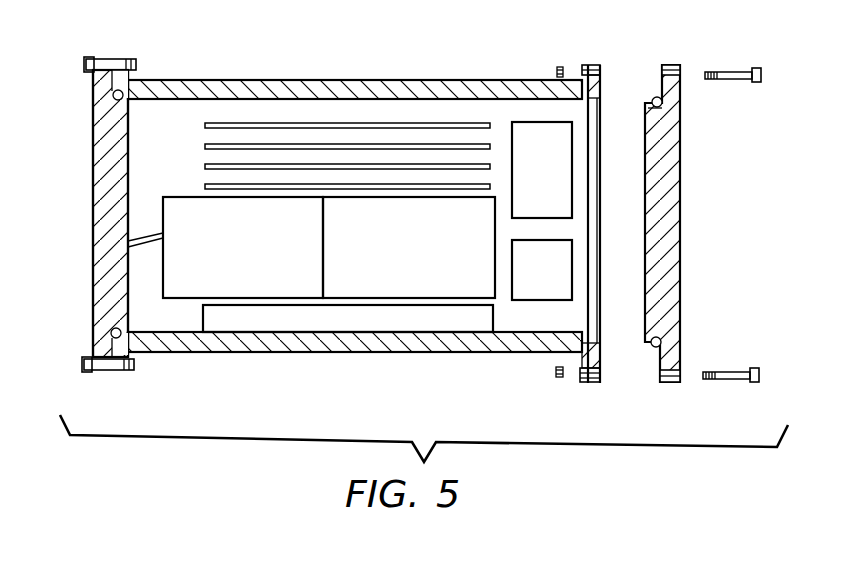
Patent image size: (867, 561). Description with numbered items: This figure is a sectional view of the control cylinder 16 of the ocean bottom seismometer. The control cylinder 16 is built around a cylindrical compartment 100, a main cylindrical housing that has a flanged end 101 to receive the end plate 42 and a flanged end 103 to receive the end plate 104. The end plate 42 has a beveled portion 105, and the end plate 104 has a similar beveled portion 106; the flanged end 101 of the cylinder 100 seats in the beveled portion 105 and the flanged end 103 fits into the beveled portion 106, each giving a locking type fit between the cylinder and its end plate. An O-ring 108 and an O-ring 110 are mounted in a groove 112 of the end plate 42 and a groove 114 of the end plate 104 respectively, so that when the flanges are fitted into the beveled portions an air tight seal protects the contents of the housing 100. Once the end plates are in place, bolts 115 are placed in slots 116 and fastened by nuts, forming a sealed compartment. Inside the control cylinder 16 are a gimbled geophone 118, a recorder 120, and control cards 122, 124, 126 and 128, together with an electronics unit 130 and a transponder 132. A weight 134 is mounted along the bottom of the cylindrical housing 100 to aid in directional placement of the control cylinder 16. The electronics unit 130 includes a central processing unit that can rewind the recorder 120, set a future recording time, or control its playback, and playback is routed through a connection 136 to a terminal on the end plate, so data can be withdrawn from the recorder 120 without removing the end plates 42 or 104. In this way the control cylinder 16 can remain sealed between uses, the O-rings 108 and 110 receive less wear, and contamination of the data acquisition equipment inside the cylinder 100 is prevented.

The control cylinder 16 is at (372, 68).
The end plate 42 is at (93, 242).
The cylindrical compartment 100 is at (452, 80).
The flanged end 101 is at (122, 58).
The flanged end 103 is at (600, 65).
The end plate 104 is at (672, 207).
The beveled portion 105 is at (93, 326).
The beveled portion 106 is at (656, 97).
The O-ring 108 is at (127, 88).
The O-ring 110 is at (655, 101).
The groove 112 is at (93, 108).
The groove 114 is at (658, 108).
The bolts 115 is at (105, 375).
The slots 116 is at (680, 67).
The gimbled geophone 118 is at (562, 172).
The recorder 120 is at (418, 285).
The control card 122 is at (204, 124).
The control card 124 is at (204, 146).
The control card 126 is at (204, 166).
The control card 128 is at (204, 186).
The electronics unit 130 is at (248, 280).
The transponder 132 is at (552, 275).
The weight 134 is at (353, 331).
The connection 136 is at (163, 235).